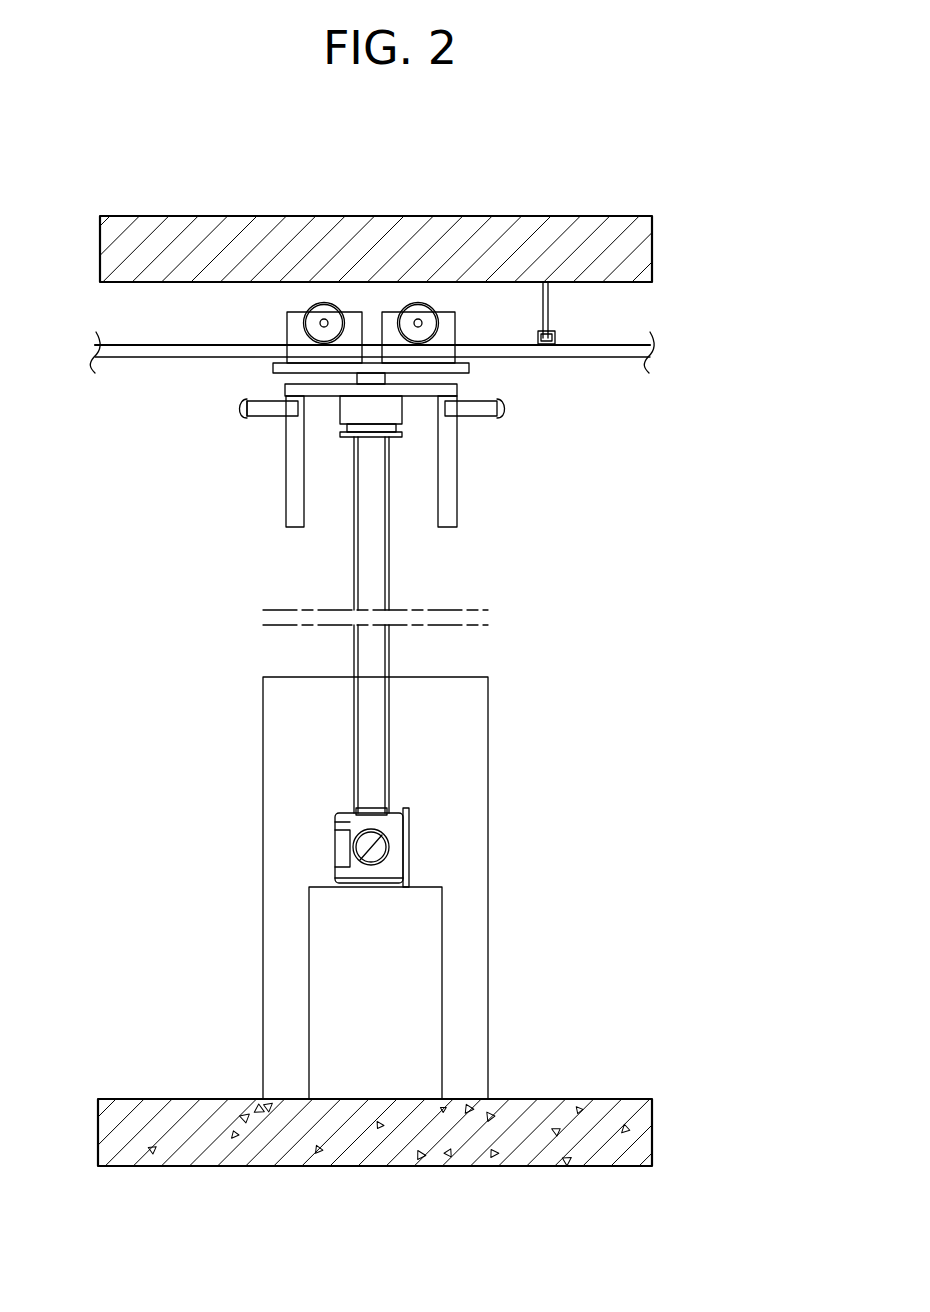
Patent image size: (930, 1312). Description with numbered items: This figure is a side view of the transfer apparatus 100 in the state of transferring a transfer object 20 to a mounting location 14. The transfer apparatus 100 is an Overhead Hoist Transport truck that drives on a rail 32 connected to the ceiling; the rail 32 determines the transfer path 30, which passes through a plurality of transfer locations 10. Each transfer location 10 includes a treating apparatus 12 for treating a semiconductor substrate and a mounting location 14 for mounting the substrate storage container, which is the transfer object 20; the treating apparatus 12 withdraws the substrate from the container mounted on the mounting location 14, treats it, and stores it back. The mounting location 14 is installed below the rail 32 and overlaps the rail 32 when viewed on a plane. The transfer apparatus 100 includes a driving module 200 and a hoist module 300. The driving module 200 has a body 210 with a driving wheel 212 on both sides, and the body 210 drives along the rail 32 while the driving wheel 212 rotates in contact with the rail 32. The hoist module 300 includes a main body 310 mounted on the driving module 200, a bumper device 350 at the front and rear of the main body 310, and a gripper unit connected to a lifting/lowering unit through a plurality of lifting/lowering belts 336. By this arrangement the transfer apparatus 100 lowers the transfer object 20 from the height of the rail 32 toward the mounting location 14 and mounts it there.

The transfer location 10 is at (388, 888).
The treating apparatus 12 is at (489, 727).
The mounting location 14 is at (443, 993).
The transfer object 20 is at (336, 848).
The transfer path 30 is at (201, 368).
The rail 32 is at (553, 358).
The transfer apparatus 100 is at (355, 589).
The driving module 200 is at (382, 254).
The body 210 is at (456, 329).
The driving wheel 212 is at (418, 306).
The hoist module 300 is at (392, 455).
The main body 310 is at (456, 492).
The lifting/lowering belt 336 is at (391, 572).
The bumper device 350 is at (509, 416).